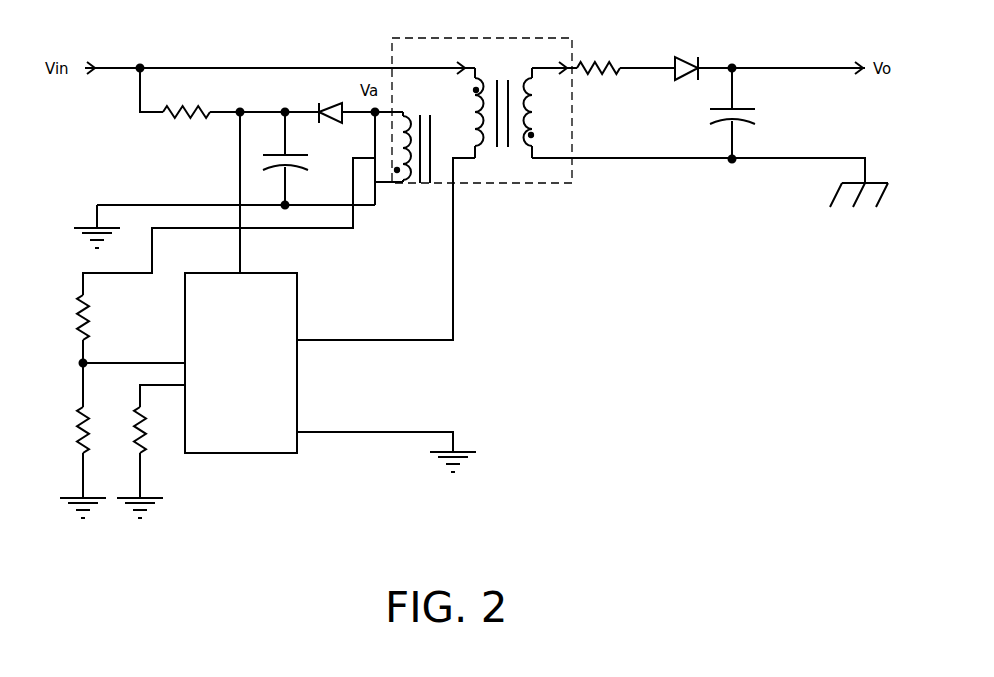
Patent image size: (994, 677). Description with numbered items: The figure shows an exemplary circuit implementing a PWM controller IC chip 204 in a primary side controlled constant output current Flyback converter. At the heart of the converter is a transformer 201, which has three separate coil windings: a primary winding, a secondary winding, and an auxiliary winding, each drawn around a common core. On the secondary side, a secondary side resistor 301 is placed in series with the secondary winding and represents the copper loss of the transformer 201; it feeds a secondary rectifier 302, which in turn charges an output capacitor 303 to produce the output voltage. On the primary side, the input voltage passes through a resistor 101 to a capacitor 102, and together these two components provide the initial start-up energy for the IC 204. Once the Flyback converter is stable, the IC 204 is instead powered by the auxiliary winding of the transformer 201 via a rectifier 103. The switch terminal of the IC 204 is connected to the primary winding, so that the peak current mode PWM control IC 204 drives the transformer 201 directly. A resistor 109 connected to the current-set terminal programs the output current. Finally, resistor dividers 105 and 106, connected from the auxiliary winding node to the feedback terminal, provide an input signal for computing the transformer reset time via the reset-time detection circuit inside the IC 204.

The resistor 101 is at (182, 119).
The capacitor 102 is at (297, 169).
The rectifier 103 is at (330, 124).
The resistor divider 105 is at (79, 329).
The resistor divider 106 is at (79, 443).
The resistor 109 is at (135, 443).
The transformer 201 is at (496, 37).
The PWM controller IC chip 204 is at (255, 337).
The secondary side resistor 301 is at (599, 62).
The secondary rectifier 302 is at (684, 57).
The output capacitor 303 is at (720, 123).